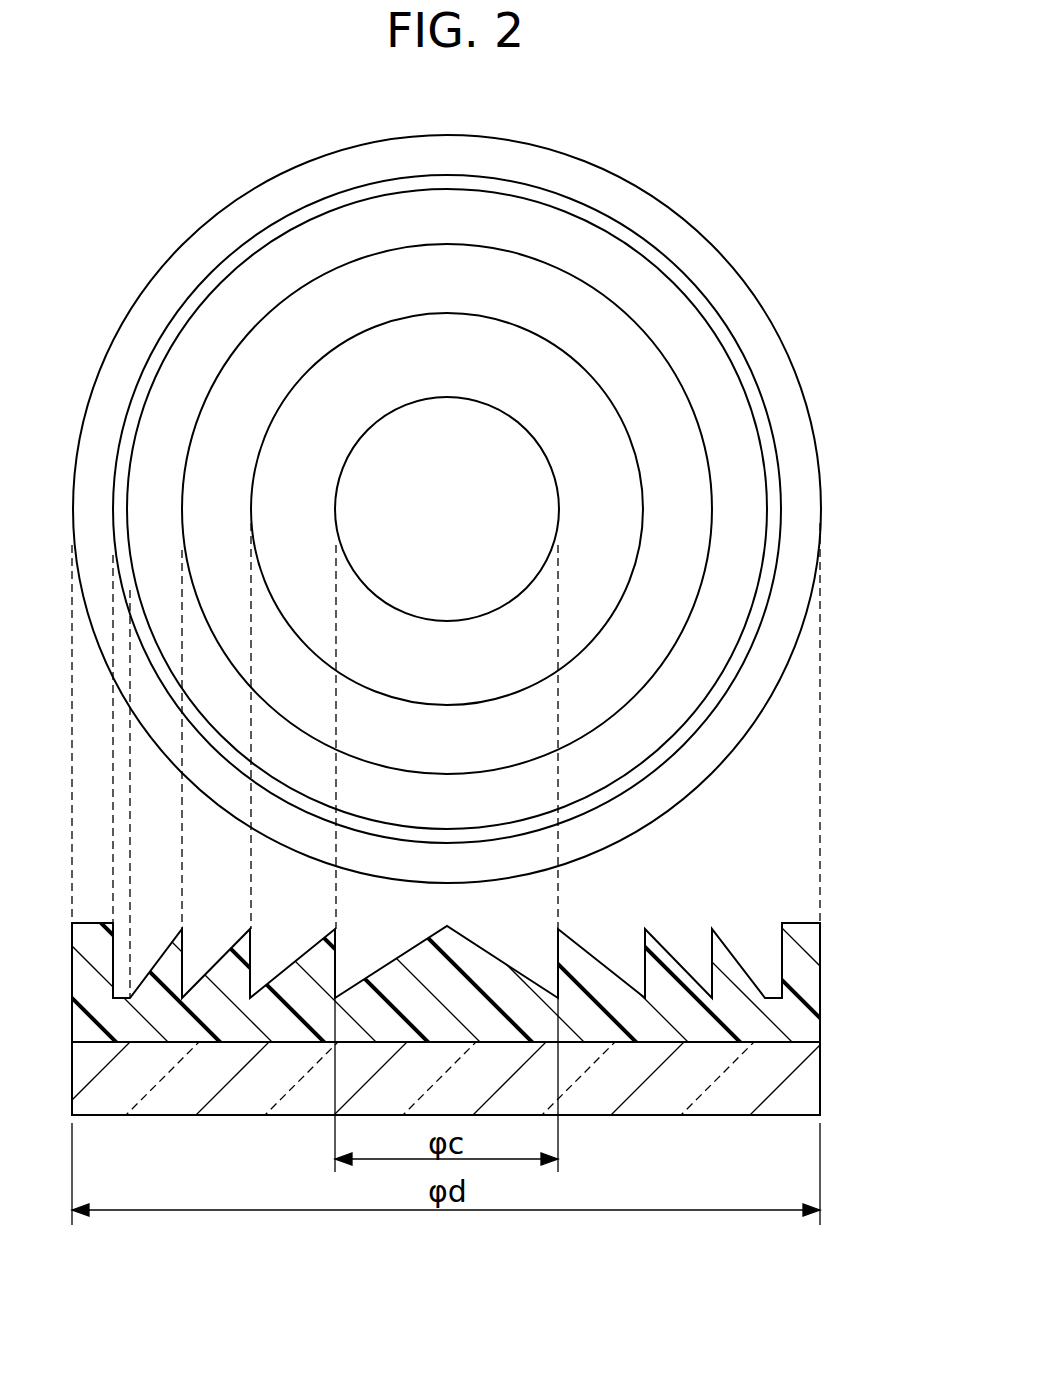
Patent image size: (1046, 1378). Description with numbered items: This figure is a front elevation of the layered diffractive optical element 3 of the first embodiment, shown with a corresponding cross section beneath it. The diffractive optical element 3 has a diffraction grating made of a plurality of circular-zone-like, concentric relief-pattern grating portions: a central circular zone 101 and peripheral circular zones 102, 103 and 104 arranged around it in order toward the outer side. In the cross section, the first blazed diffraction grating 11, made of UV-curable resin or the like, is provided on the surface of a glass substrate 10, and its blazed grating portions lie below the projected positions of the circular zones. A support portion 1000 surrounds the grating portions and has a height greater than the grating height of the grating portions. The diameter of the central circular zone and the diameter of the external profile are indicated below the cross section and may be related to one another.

The layered diffractive optical element 3 is at (498, 492).
The support portion 1000 is at (720, 282).
The peripheral circular zone 104 is at (717, 387).
The peripheral circular zone 103 is at (687, 502).
The peripheral circular zone 102 is at (620, 560).
The central circular zone 101 is at (517, 565).
The first blazed diffraction grating 11 is at (802, 993).
The glass substrate 10 is at (802, 1085).